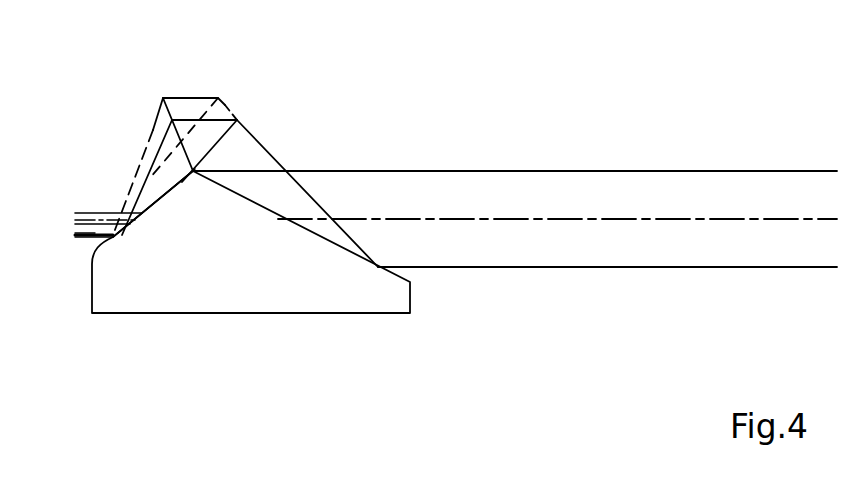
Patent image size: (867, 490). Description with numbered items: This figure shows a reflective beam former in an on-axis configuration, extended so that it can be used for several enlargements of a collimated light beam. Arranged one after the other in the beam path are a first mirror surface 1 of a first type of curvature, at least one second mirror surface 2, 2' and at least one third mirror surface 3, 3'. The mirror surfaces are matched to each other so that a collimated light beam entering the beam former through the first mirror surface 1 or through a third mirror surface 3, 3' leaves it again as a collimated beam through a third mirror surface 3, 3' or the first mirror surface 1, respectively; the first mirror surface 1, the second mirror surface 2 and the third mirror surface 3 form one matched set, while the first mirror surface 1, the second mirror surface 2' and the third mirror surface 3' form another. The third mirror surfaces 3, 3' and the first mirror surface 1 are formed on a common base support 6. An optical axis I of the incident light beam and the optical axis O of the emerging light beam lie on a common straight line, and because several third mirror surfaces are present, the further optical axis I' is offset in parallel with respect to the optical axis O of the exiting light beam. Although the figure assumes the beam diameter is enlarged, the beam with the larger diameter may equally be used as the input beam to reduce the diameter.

The first mirror surface 1 is at (335, 247).
The optical axis of the emerging light beam O is at (512, 218).
The base support 6 is at (245, 293).
The third mirror surface 3 is at (141, 185).
The third mirror surface 3' is at (108, 302).
The second mirror surface 2 is at (250, 159).
The second mirror surface 2' is at (175, 122).
The optical axis of the incident light beam I is at (78, 206).
The optical axis of the incident light beam I' is at (67, 263).